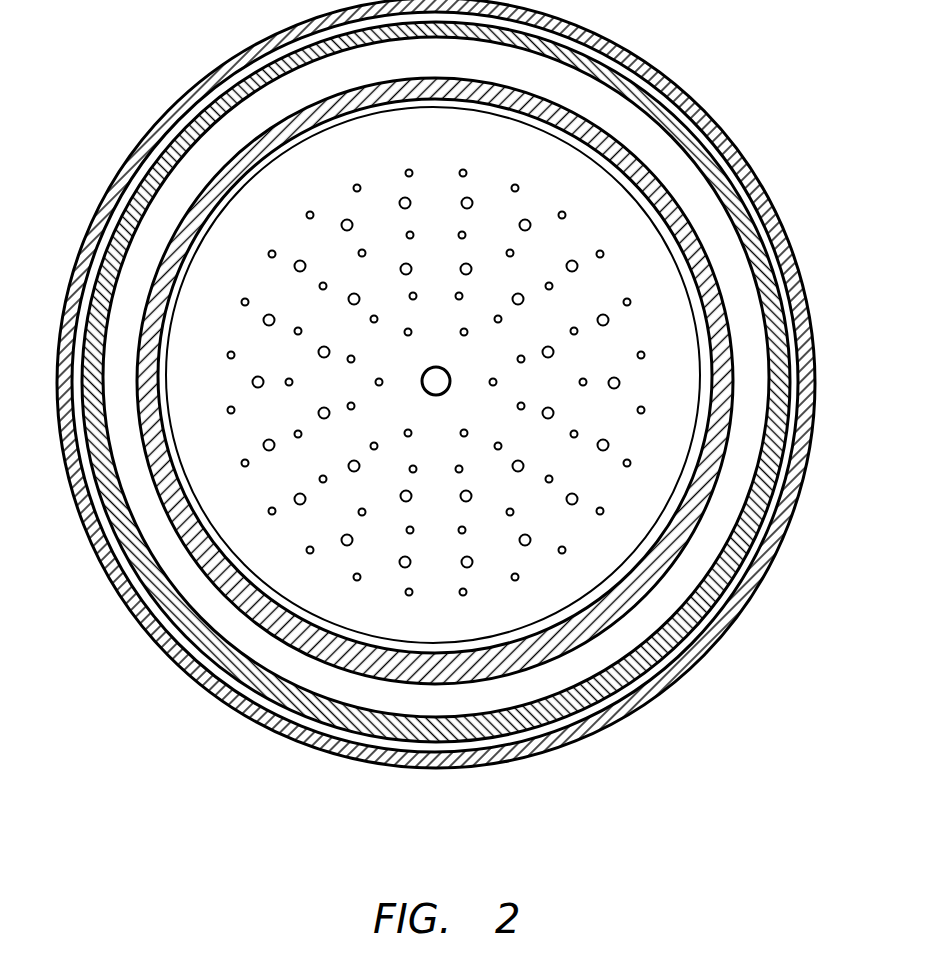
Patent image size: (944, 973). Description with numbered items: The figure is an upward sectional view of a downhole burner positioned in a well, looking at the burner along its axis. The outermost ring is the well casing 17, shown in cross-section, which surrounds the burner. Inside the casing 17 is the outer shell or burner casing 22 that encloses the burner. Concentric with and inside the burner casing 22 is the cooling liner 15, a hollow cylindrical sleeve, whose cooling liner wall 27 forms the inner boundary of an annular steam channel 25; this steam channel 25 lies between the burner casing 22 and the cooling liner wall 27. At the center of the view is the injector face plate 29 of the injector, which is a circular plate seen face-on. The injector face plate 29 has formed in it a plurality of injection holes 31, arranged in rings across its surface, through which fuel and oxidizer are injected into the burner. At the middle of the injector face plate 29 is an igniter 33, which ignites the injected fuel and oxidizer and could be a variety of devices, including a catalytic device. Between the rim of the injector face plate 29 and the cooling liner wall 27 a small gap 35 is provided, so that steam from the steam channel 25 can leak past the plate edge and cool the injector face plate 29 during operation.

The casing 17 is at (163, 115).
The burner casing 22 is at (658, 107).
The steam channel 25 is at (747, 477).
The cooling liner 15 is at (718, 287).
The small gap 35 is at (678, 525).
The cooling liner wall 27 is at (738, 310).
The injector face plate 29 is at (182, 353).
The igniter 33 is at (425, 389).
The injection holes 31 is at (355, 575).